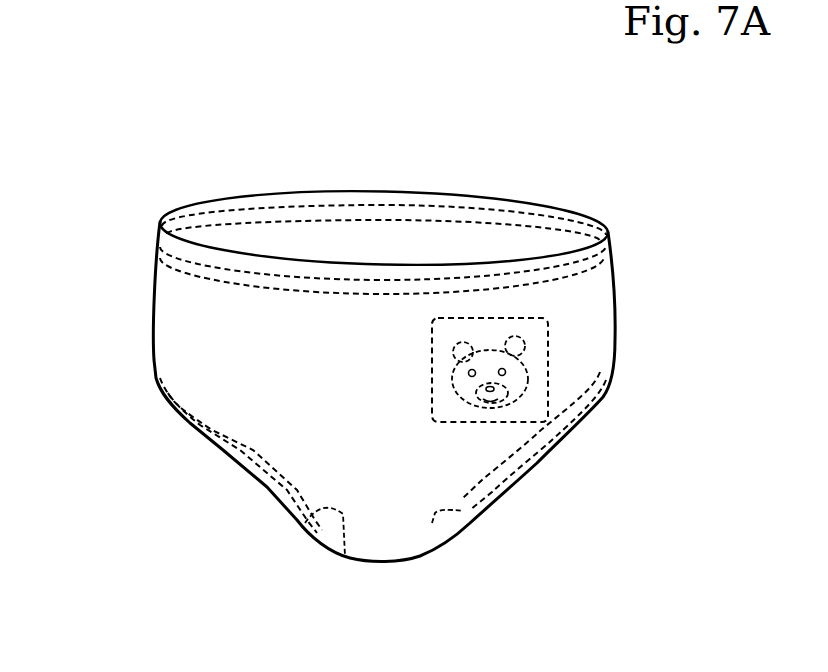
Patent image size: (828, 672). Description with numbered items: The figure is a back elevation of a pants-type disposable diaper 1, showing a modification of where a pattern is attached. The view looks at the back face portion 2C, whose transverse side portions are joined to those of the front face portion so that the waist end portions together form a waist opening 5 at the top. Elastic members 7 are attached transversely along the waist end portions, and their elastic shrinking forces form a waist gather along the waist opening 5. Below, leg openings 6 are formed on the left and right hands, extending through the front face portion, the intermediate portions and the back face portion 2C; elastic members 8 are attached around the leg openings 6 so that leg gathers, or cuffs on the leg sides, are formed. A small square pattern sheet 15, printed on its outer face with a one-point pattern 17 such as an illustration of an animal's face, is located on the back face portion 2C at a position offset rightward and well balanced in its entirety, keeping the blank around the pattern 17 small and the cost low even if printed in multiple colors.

The disposable diaper 1 is at (618, 347).
The back face portion 2C is at (183, 346).
The waist opening 5 is at (347, 232).
The elastic members 7 is at (488, 207).
The leg openings 6 is at (512, 481).
The elastic members 8 is at (345, 558).
The pattern sheet 15 is at (428, 392).
The pattern 17 is at (540, 357).